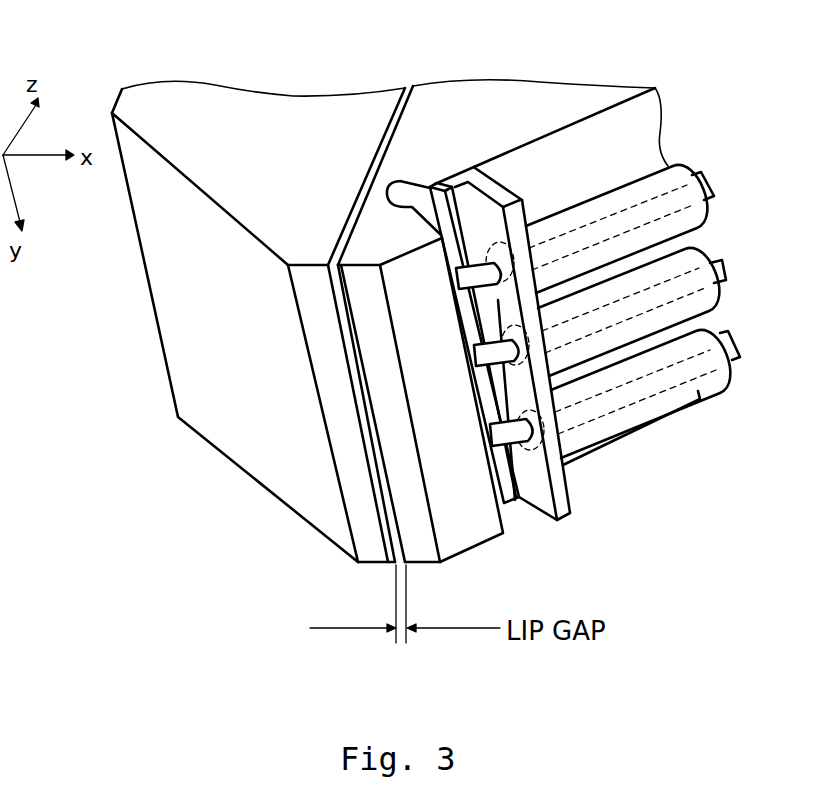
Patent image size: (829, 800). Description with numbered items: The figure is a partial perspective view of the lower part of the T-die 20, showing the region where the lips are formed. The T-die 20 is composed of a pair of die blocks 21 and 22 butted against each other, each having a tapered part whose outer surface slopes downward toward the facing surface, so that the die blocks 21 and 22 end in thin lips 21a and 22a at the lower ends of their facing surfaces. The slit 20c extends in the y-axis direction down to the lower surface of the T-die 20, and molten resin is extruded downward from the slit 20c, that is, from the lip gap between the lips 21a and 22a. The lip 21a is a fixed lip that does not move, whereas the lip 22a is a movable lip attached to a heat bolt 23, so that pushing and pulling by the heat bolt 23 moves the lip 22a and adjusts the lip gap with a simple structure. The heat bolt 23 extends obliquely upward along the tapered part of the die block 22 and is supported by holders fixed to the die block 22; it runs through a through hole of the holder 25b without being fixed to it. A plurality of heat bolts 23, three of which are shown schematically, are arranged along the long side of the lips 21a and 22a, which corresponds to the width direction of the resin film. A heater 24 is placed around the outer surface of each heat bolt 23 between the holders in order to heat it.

The T-die 20 is at (704, 84).
The slit 20c is at (412, 76).
The die block 21 is at (294, 106).
The lip 21a is at (375, 557).
The die block 22 is at (488, 88).
The lip 22a is at (420, 556).
The heat bolt 23 is at (708, 183).
The heater 24 is at (699, 223).
The holder 25b is at (455, 180).